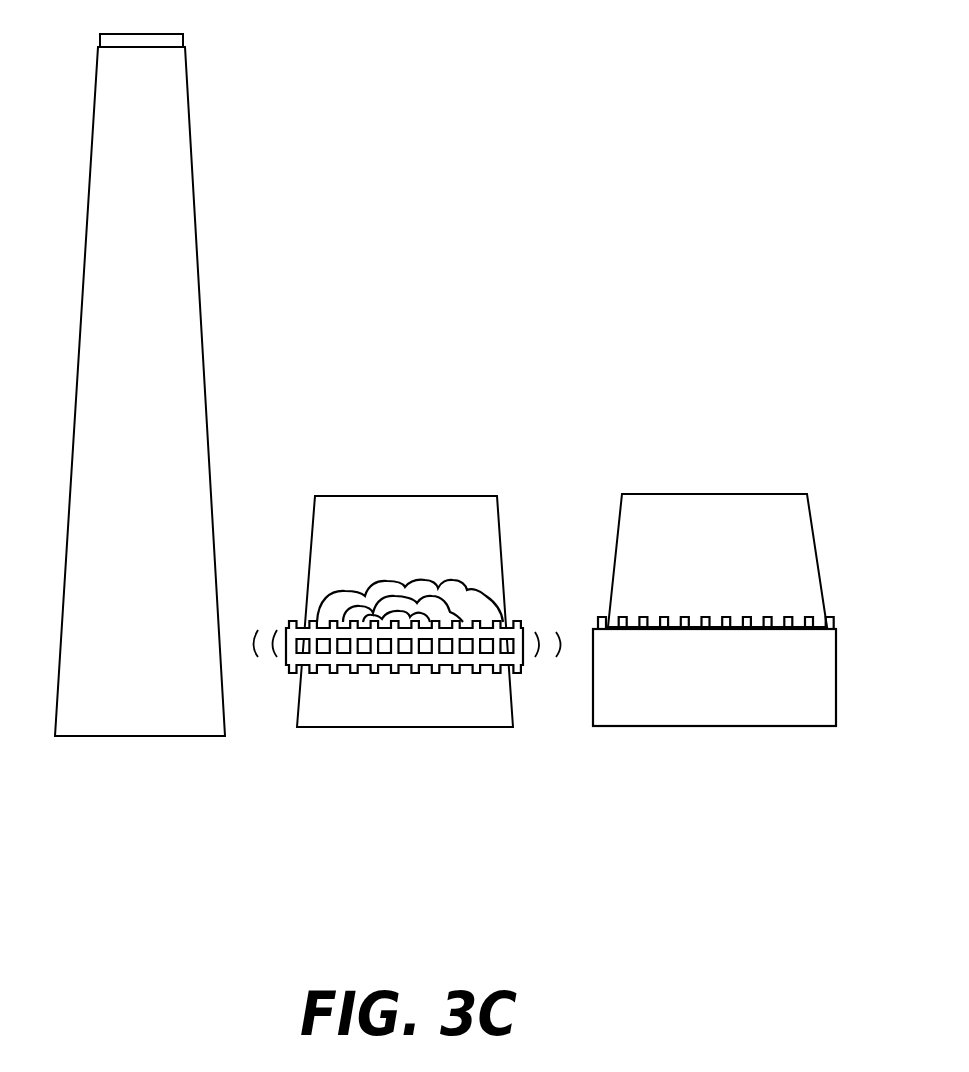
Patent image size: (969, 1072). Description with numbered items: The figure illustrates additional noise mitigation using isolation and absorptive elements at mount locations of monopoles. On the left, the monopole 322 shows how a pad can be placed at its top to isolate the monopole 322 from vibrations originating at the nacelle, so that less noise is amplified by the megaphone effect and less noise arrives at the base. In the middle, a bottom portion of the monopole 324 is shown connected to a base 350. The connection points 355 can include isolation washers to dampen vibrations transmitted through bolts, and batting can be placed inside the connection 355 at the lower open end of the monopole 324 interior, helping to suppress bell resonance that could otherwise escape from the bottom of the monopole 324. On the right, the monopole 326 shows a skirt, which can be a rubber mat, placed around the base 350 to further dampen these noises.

The monopole 322 is at (182, 200).
The monopole 324 is at (410, 510).
The monopole 326 is at (706, 512).
The base 350 is at (380, 712).
The connection points 355 is at (522, 665).